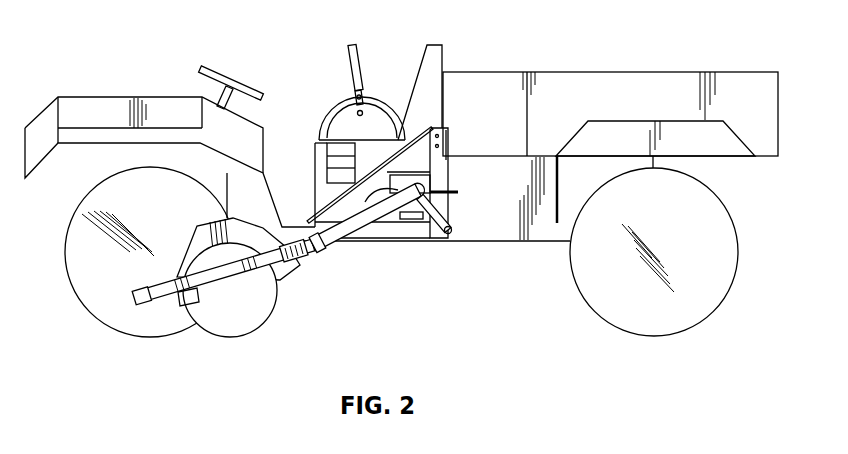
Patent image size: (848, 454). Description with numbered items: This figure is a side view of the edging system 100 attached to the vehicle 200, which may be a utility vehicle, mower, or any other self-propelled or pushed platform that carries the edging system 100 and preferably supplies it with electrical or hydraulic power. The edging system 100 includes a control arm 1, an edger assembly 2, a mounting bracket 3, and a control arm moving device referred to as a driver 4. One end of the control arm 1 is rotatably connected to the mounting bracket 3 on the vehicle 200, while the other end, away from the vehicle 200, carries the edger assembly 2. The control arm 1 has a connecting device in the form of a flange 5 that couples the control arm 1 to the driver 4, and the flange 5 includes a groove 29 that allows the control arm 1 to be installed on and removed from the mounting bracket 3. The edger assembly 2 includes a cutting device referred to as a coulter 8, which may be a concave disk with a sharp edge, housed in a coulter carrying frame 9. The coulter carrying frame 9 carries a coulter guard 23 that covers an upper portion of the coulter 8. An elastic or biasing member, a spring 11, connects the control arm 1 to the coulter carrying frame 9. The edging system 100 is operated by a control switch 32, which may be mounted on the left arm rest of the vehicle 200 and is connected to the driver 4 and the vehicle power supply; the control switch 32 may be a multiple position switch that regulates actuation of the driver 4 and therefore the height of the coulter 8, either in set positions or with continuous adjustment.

The edging system 100 is at (328, 316).
The vehicle 200 is at (610, 71).
The control arm 1 is at (330, 248).
The edger assembly 2 is at (170, 282).
The mounting bracket 3 is at (443, 163).
The driver 4 is at (340, 205).
The flange 5 is at (452, 218).
The coulter 8 is at (234, 312).
The coulter carrying frame 9 is at (195, 302).
The spring 11 is at (290, 274).
The coulter guard 23 is at (190, 238).
The groove 29 is at (447, 157).
The control switch 32 is at (352, 48).